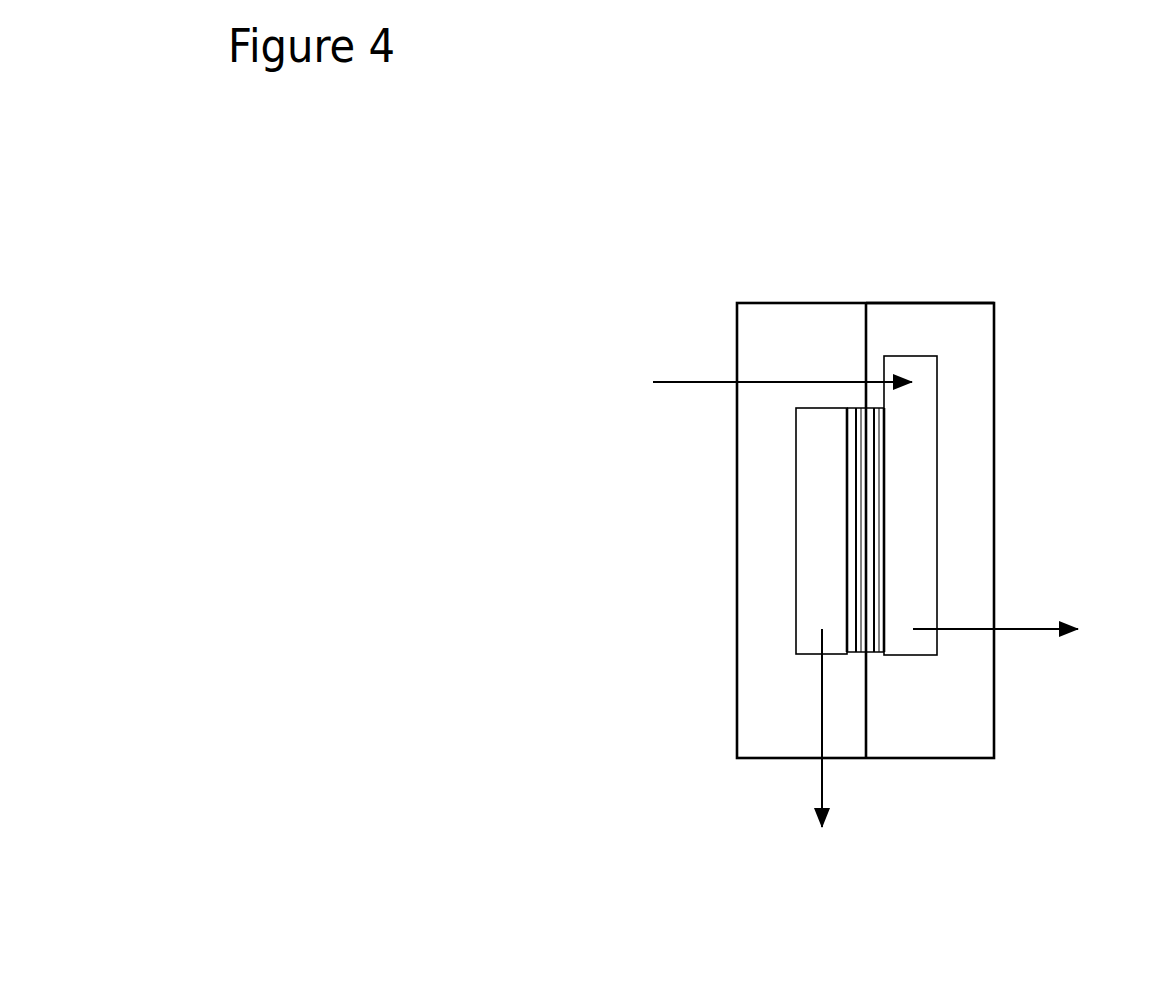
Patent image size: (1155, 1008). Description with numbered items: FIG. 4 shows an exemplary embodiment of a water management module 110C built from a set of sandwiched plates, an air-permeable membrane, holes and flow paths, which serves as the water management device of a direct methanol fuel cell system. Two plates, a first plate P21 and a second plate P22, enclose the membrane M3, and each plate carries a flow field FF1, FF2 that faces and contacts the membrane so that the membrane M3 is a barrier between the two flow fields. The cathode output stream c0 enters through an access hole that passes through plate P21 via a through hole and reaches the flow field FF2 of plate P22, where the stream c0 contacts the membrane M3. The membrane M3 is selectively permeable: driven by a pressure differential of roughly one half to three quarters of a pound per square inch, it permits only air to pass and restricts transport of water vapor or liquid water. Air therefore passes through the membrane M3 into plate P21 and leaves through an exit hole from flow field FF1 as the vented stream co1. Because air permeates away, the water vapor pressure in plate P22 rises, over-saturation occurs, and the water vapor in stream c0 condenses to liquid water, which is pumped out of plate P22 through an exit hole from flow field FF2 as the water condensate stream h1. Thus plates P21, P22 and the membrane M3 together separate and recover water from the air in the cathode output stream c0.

The water management module 110C is at (565, 813).
The plate P21 is at (827, 343).
The plate P22 is at (955, 343).
The flow field FF1 is at (833, 540).
The flow field FF2 is at (927, 557).
The membrane M3 is at (860, 408).
The cathode output stream c0 is at (705, 382).
The water condensate stream h1 is at (1027, 630).
The vented air output stream co1 is at (833, 751).